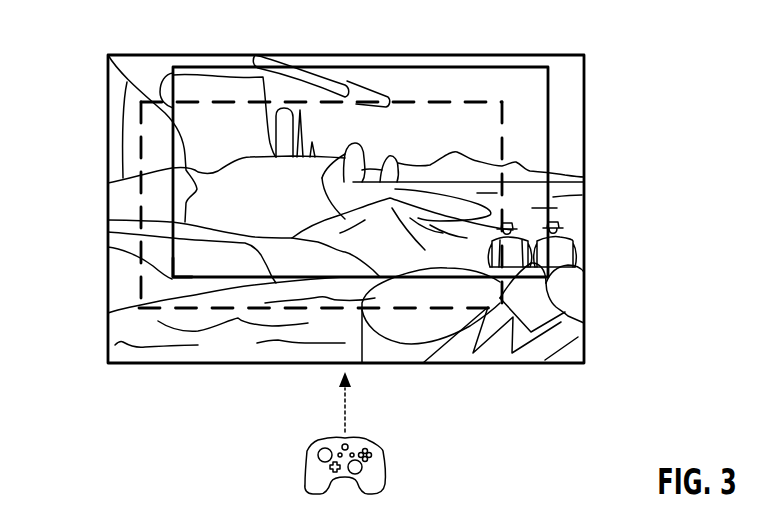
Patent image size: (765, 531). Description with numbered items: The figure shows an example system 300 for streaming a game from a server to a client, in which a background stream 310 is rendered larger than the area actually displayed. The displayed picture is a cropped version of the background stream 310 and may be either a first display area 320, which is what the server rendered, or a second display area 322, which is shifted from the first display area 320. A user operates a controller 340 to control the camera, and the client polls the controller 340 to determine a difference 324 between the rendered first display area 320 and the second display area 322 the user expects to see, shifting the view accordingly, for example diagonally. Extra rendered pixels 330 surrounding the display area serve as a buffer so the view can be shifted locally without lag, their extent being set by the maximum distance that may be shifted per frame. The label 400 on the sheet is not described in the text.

The example system 300 is at (102, 31).
The background stream 310 is at (108, 304).
The first display area 320 is at (502, 154).
The second display area 322 is at (548, 82).
The difference 324 is at (152, 292).
The extra rendered pixels 330 is at (574, 336).
The controller 340 is at (310, 467).
The reference to following figure 400 is at (102, 523).